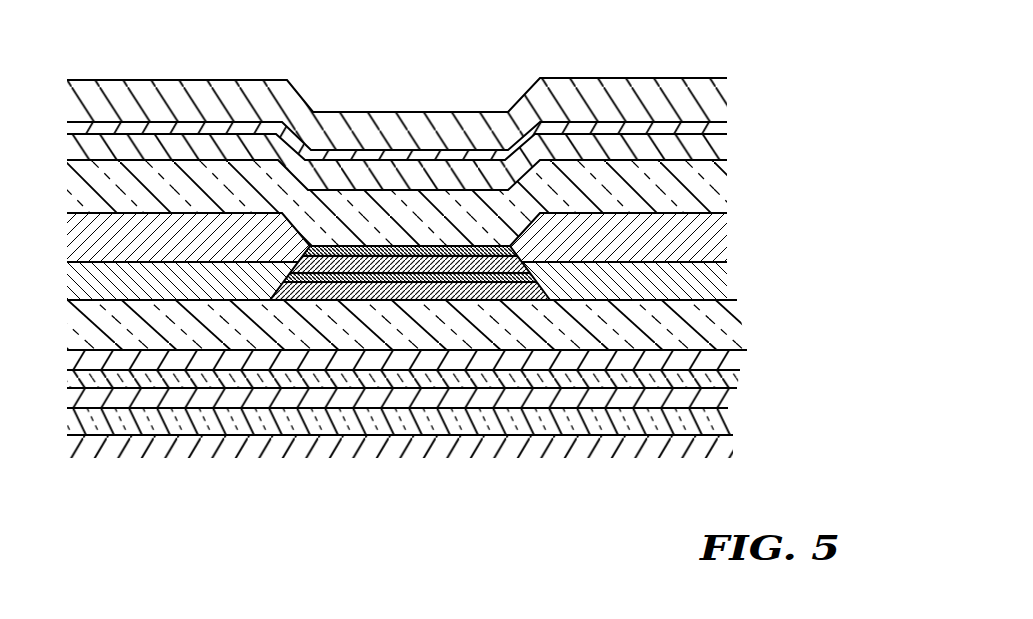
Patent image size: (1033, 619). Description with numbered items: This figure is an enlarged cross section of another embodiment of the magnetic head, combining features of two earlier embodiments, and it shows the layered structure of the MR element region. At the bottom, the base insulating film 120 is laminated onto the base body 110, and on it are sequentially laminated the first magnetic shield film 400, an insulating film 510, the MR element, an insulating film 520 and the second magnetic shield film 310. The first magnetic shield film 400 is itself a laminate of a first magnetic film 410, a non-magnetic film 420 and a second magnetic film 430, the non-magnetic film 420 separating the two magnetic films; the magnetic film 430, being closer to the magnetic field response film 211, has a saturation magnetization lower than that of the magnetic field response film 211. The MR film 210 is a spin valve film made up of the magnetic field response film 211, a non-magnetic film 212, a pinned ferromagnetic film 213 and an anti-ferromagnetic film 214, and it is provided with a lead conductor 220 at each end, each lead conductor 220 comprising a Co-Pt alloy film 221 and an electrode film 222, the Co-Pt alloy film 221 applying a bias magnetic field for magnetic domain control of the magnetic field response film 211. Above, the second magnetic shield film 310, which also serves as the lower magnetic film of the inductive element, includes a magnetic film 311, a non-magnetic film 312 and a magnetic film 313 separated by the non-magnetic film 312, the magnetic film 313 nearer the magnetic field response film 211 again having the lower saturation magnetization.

The base body 110 is at (190, 443).
The base insulating film 120 is at (103, 425).
The MR film 210 is at (408, 270).
The magnetic field response film 211 is at (292, 300).
The non-magnetic film 212 is at (372, 282).
The pinned ferromagnetic film 213 is at (425, 263).
The anti-ferromagnetic film 214 is at (487, 248).
The lead conductor 220 is at (433, 161).
The Co-Pt alloy film 221 is at (727, 275).
The electrode film 222 is at (720, 233).
The second magnetic shield film 310 is at (433, 105).
The magnetic film 311 is at (717, 93).
The non-magnetic film 312 is at (730, 125).
The magnetic film 313 is at (727, 152).
The first magnetic shield film 400 is at (400, 463).
The first magnetic film 410 is at (723, 397).
The non-magnetic film 420 is at (728, 377).
The second magnetic film 430 is at (725, 368).
The insulating film 510 is at (727, 320).
The insulating film 520 is at (720, 188).